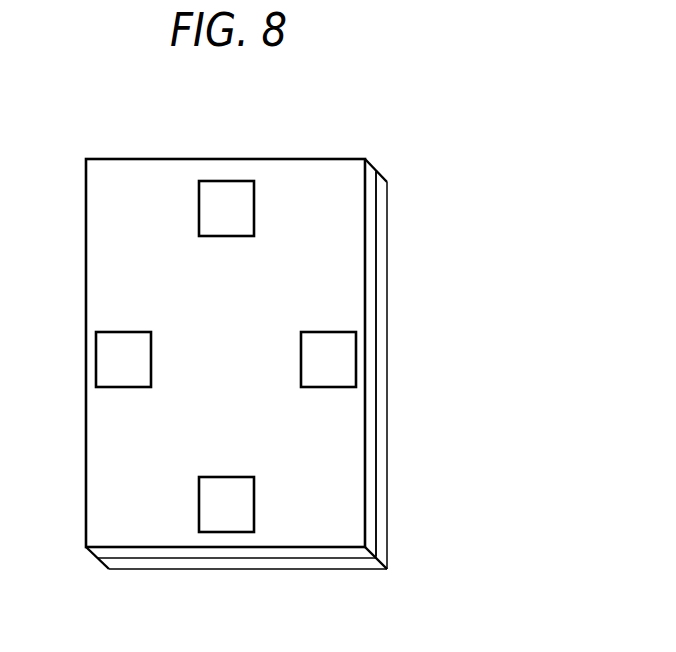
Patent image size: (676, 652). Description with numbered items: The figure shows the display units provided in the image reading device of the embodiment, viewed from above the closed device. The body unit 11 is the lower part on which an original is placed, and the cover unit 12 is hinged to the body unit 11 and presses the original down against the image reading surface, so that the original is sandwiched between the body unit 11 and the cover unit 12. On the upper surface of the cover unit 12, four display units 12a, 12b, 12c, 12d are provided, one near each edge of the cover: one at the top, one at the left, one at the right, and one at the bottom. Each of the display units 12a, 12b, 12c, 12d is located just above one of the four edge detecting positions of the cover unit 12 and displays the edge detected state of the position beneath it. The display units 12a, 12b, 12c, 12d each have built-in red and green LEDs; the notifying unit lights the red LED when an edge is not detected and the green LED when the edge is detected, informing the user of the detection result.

The body unit 11 is at (388, 200).
The cover unit 12 is at (368, 283).
The display unit 12a is at (110, 360).
The display unit 12b is at (228, 527).
The display unit 12c is at (338, 358).
The display unit 12d is at (216, 190).